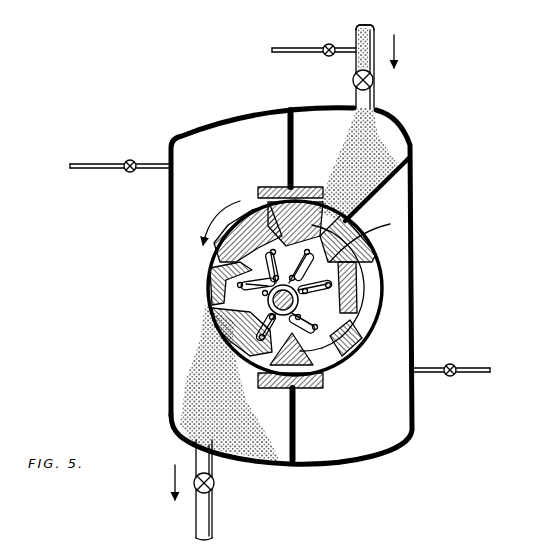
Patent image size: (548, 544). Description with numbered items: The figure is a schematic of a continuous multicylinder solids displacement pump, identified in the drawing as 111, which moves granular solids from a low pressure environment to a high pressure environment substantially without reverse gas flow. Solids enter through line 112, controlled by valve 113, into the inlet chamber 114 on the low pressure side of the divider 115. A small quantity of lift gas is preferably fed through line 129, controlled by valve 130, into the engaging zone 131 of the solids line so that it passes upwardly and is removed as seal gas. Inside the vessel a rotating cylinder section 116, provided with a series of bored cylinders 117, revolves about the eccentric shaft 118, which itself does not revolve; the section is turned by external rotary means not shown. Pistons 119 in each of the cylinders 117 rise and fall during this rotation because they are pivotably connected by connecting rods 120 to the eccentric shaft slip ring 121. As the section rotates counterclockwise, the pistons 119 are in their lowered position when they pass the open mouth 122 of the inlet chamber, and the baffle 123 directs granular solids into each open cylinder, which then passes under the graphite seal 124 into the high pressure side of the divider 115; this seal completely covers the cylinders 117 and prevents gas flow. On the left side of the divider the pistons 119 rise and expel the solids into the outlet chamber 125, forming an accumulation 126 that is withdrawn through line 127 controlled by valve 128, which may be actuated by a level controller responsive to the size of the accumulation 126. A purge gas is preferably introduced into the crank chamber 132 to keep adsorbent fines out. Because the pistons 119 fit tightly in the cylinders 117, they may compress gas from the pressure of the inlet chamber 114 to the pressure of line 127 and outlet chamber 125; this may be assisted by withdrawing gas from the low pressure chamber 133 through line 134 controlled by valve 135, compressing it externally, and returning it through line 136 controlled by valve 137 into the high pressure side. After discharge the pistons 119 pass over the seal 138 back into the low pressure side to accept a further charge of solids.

The processing apparatus 111 is at (547, 523).
The line 112 is at (376, 49).
The valve 113 is at (353, 80).
The inlet chamber 114 is at (395, 142).
The divider 115 is at (294, 148).
The rotating cylinder section 116 is at (345, 242).
The bored cylinders 117 is at (372, 296).
The eccentric shaft 118 is at (276, 300).
The pistons 119 is at (221, 219).
The connecting rods 120 is at (262, 316).
The eccentric shaft slip ring 121 is at (340, 364).
The open mouth 122 is at (385, 200).
The baffle 123 is at (366, 219).
The graphite seal 124 is at (278, 187).
The outlet chamber 125 is at (272, 458).
The accumulation 126 is at (212, 416).
The line 127 is at (200, 527).
The valve 128 is at (196, 486).
The line 129 is at (300, 56).
The valve 130 is at (345, 25).
The engaging zone 131 is at (372, 28).
The crank chamber 132 is at (250, 266).
The vessel bottom 133 is at (370, 455).
The line 134 is at (437, 373).
The valve 135 is at (450, 365).
The line 136 is at (90, 170).
The valve 137 is at (133, 160).
The seal 138 is at (262, 388).